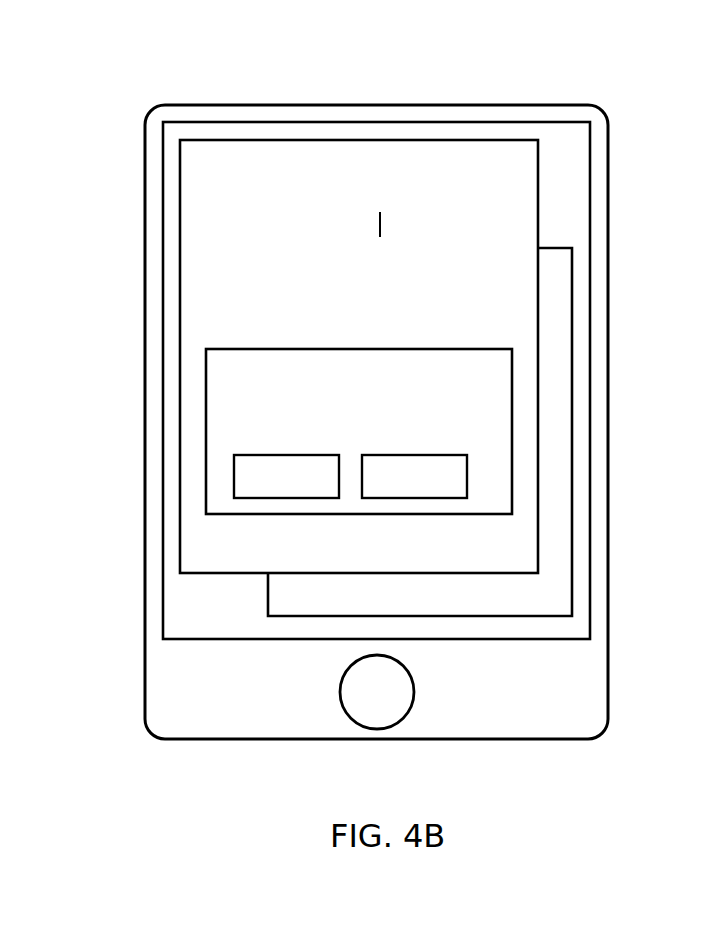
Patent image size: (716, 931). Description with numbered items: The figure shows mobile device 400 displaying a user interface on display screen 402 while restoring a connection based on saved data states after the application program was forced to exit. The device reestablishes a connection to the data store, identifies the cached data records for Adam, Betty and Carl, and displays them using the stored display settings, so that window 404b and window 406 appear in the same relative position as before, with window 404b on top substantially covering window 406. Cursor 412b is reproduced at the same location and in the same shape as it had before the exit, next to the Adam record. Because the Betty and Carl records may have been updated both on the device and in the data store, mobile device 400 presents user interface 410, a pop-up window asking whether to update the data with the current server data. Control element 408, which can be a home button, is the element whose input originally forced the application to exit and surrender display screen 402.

The mobile device 400 is at (315, 105).
The display screen 402 is at (463, 122).
The window 404b is at (180, 264).
The window 406 is at (572, 460).
The control element 408 is at (412, 695).
The user interface 410 is at (206, 432).
The cursor 412b is at (382, 225).